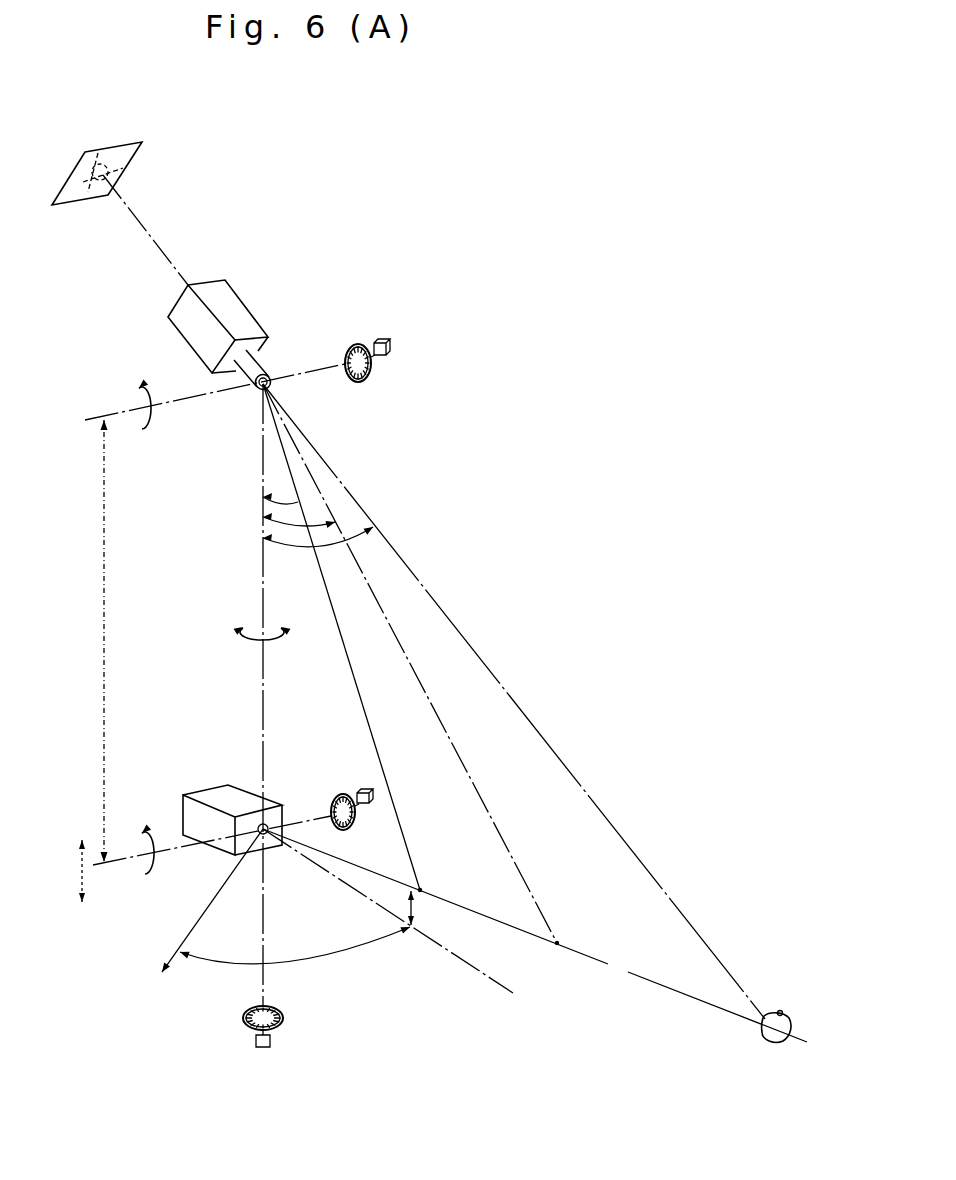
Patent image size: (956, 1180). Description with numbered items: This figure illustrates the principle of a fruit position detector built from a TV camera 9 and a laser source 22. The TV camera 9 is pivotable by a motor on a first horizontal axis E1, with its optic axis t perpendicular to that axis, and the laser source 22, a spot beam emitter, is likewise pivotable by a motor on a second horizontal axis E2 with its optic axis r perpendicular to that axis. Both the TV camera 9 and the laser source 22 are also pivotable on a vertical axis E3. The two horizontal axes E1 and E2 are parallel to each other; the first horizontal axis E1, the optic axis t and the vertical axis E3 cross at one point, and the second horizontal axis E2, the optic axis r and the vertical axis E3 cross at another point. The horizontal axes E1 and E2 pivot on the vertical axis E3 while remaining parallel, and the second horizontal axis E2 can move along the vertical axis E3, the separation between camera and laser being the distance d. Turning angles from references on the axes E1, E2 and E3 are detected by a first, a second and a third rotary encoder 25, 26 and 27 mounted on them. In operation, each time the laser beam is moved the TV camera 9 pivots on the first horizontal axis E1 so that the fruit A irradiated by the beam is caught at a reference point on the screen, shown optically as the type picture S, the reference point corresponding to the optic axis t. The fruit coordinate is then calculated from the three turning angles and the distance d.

The type picture (screen) S is at (133, 159).
The TV camera 9 is at (250, 313).
The first rotary encoder 25 is at (378, 378).
The first horizontal axis E1 is at (212, 397).
The vertical axis E3 is at (262, 556).
The distance between TV camera and laser source d is at (97, 641).
The second horizontal axis E2 is at (163, 848).
The laser source 22 is at (217, 795).
The second rotary encoder 26 is at (343, 773).
The third rotary encoder 27 is at (245, 1035).
The optic axis of TV camera t is at (557, 748).
The line of sight t′ is at (470, 773).
The optic axis of laser source r is at (628, 972).
The fruit A is at (792, 1010).